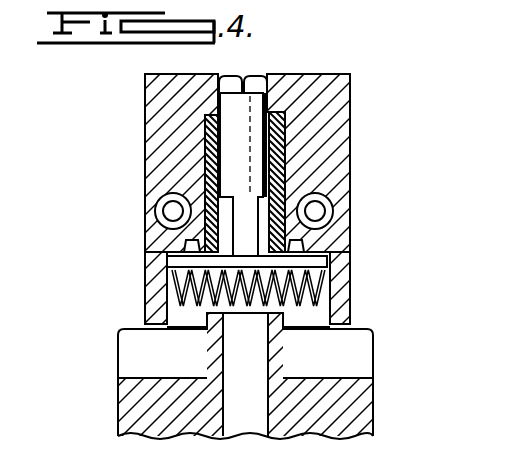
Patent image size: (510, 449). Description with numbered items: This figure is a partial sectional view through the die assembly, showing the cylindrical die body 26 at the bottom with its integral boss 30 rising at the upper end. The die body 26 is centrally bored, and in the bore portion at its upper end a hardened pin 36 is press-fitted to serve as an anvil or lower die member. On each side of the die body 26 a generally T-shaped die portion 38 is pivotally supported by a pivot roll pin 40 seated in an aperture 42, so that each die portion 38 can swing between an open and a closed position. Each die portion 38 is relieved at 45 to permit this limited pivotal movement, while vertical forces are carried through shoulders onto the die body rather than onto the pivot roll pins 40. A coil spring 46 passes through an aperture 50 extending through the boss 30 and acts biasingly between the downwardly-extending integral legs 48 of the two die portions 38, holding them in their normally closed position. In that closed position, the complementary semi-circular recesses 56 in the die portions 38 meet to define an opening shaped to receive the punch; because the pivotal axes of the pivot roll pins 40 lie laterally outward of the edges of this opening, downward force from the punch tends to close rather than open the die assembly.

The die body 26 is at (356, 408).
The boss 30 is at (288, 164).
The hardened pin 36 is at (256, 153).
The die portion 38 is at (162, 96).
The pivot roll pin 40 is at (149, 204).
The aperture 42 is at (151, 230).
The relief 45 is at (158, 250).
The coil spring 46 is at (332, 284).
The leg 48 is at (147, 303).
The aperture 50 is at (328, 261).
The semi-circular recess 56 is at (232, 76).